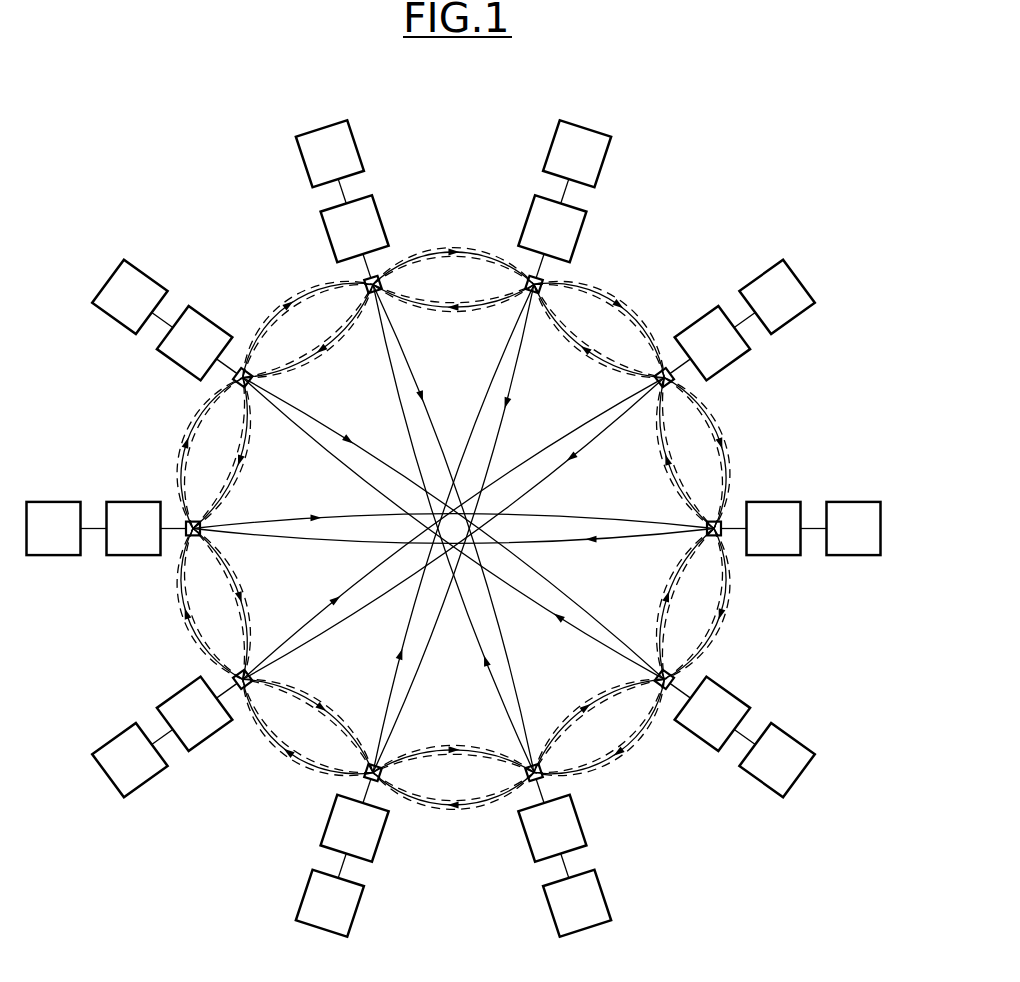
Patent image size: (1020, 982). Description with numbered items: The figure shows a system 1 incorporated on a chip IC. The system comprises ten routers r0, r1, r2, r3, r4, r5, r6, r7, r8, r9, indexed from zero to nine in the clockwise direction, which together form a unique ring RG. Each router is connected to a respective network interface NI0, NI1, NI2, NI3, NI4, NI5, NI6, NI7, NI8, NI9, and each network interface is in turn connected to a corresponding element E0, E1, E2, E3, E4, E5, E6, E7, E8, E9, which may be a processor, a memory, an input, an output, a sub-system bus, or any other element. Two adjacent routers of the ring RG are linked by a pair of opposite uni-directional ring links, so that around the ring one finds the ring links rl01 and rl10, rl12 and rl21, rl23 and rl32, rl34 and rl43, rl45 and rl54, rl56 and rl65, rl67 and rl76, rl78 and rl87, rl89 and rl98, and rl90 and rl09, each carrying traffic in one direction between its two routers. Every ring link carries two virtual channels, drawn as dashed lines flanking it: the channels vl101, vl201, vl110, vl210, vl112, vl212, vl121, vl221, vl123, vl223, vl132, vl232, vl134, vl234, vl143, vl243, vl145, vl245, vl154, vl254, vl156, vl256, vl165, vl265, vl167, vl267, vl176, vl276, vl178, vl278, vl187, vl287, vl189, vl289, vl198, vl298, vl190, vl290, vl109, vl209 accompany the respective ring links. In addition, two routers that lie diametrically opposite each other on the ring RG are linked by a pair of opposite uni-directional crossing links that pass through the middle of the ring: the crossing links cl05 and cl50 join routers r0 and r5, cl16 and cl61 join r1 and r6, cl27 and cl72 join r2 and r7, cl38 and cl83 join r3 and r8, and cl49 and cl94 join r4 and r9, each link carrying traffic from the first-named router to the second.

The system 1 is at (198, 185).
The chip IC is at (733, 122).
The ring RG is at (715, 236).
The element E0 is at (330, 153).
The element E1 is at (577, 153).
The element E2 is at (776, 297).
The element E3 is at (854, 528).
The element E4 is at (776, 760).
The element E5 is at (577, 903).
The element E6 is at (330, 903).
The element E7 is at (129, 760).
The element E8 is at (54, 528).
The element E9 is at (129, 297).
The network interface NI0 is at (355, 220).
The network interface NI1 is at (552, 220).
The network interface NI2 is at (715, 343).
The network interface NI3 is at (787, 528).
The network interface NI4 is at (715, 714).
The network interface NI5 is at (552, 836).
The network interface NI6 is at (355, 836).
The network interface NI7 is at (192, 714).
The network interface NI8 is at (121, 528).
The network interface NI9 is at (192, 343).
The router r0 is at (353, 273).
The router r1 is at (522, 291).
The router r2 is at (652, 378).
The router r3 is at (705, 520).
The router r4 is at (670, 701).
The router r5 is at (552, 783).
The router r6 is at (389, 764).
The router r7 is at (234, 699).
The router r8 is at (202, 519).
The router r9 is at (254, 377).
The ring link rl01 is at (451, 261).
The ring link rl10 is at (454, 308).
The ring link rl12 is at (601, 320).
The ring link rl21 is at (598, 332).
The ring link rl23 is at (695, 450).
The ring link rl32 is at (684, 454).
The ring link rl34 is at (713, 604).
The ring link rl43 is at (666, 604).
The ring link rl45 is at (604, 729).
The ring link rl54 is at (597, 724).
The ring link rl56 is at (455, 797).
The ring link rl65 is at (453, 750).
The ring link rl67 is at (306, 734).
The ring link rl76 is at (308, 721).
The ring link rl78 is at (211, 607).
The ring link rl87 is at (220, 602).
The ring link rl89 is at (193, 453).
The ring link rl98 is at (239, 453).
The ring link rl90 is at (303, 328).
The ring link rl09 is at (310, 333).
The virtual channel vl101 is at (451, 277).
The virtual channel vl201 is at (452, 277).
The virtual channel vl110 is at (454, 292).
The virtual channel vl210 is at (454, 293).
The virtual channel vl112 is at (602, 302).
The virtual channel vl212 is at (601, 322).
The virtual channel vl121 is at (599, 331).
The virtual channel vl221 is at (597, 350).
The virtual channel vl123 is at (695, 448).
The virtual channel vl223 is at (705, 451).
The virtual channel vl132 is at (675, 454).
The virtual channel vl232 is at (681, 455).
The virtual channel vl134 is at (724, 604).
The virtual channel vl234 is at (714, 604).
The virtual channel vl143 is at (664, 604).
The virtual channel vl243 is at (654, 604).
The virtual channel vl145 is at (605, 730).
The virtual channel vl245 is at (602, 738).
The virtual channel vl154 is at (599, 721).
The virtual channel vl254 is at (596, 723).
The virtual channel vl156 is at (456, 781).
The virtual channel vl256 is at (455, 782).
The virtual channel vl165 is at (453, 766).
The virtual channel vl265 is at (452, 764).
The virtual channel vl167 is at (305, 752).
The virtual channel vl267 is at (307, 733).
The virtual channel vl176 is at (308, 725).
The virtual channel vl276 is at (308, 704).
The virtual channel vl178 is at (211, 608).
The virtual channel vl278 is at (201, 606).
The virtual channel vl187 is at (231, 603).
The virtual channel vl287 is at (221, 601).
The virtual channel vl189 is at (181, 453).
The virtual channel vl289 is at (191, 453).
The virtual channel vl198 is at (241, 453).
The virtual channel vl298 is at (251, 453).
The virtual channel vl190 is at (301, 326).
The virtual channel vl290 is at (304, 318).
The virtual channel vl109 is at (309, 333).
The virtual channel vl209 is at (311, 333).
The crossing link cl05 is at (460, 526).
The crossing link cl16 is at (461, 530).
The crossing link cl27 is at (458, 535).
The crossing link cl38 is at (453, 554).
The crossing link cl49 is at (449, 535).
The crossing link cl50 is at (446, 530).
The crossing link cl61 is at (442, 526).
The crossing link cl72 is at (449, 523).
The crossing link cl83 is at (453, 505).
The crossing link cl94 is at (458, 523).